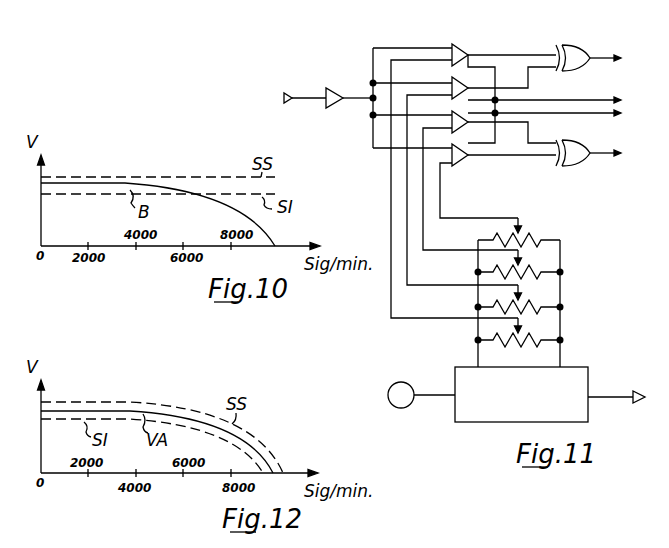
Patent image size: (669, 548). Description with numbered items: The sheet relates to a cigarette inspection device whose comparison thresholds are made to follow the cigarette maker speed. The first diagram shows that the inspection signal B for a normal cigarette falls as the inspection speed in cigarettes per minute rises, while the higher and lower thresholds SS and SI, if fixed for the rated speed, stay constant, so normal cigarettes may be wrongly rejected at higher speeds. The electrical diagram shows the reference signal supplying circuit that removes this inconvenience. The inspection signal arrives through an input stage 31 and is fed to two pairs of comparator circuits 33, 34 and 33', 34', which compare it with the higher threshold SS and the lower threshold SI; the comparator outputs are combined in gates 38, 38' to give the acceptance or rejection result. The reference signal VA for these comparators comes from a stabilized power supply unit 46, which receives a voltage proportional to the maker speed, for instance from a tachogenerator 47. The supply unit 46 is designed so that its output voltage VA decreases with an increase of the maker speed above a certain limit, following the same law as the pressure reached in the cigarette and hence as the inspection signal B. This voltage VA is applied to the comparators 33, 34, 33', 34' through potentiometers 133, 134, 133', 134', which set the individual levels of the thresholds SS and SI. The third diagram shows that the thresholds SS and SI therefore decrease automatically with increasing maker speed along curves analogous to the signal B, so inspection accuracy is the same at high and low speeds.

The input buffer amplifier 31 is at (335, 93).
The comparator circuit 33 is at (463, 43).
The comparator circuit 34 is at (443, 81).
The comparator circuit 33' is at (443, 115).
The comparator circuit 34' is at (471, 169).
The exclusive-OR gate 38 is at (588, 46).
The exclusive-OR gate 38' is at (588, 168).
The potentiometer 134' is at (528, 228).
The potentiometer 133' is at (545, 263).
The potentiometer 134 is at (545, 298).
The potentiometer 133 is at (545, 332).
The stabilized power supply unit 46 is at (578, 386).
The tachogenerator 47 is at (411, 374).